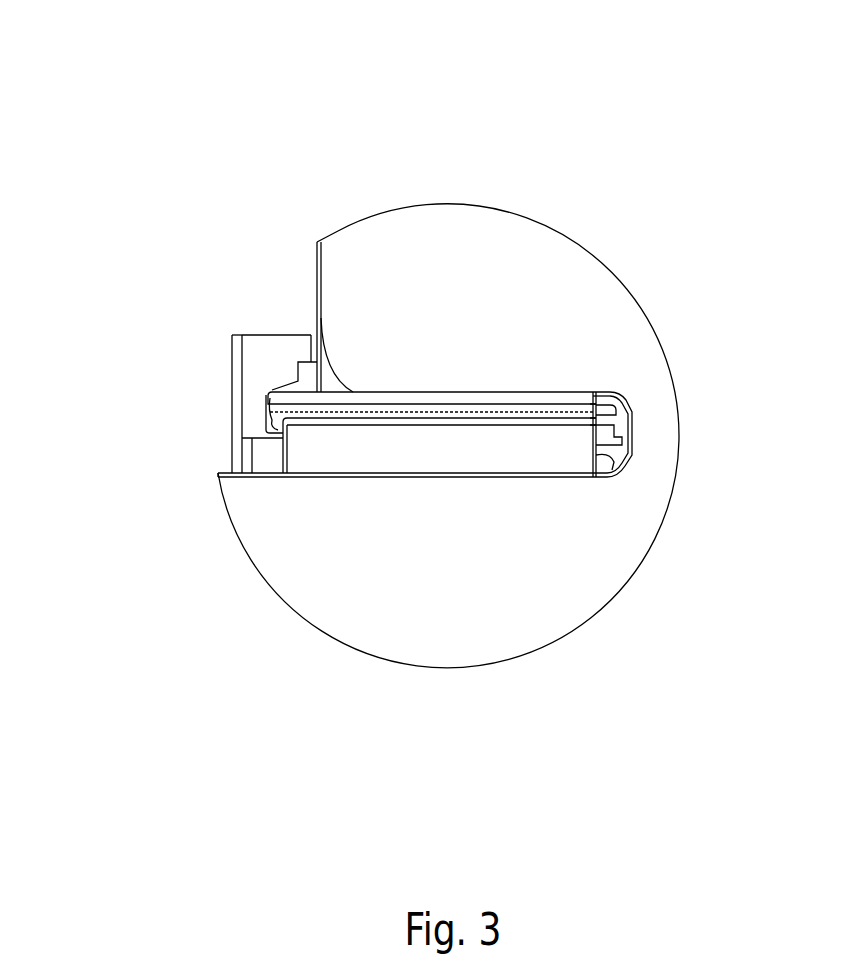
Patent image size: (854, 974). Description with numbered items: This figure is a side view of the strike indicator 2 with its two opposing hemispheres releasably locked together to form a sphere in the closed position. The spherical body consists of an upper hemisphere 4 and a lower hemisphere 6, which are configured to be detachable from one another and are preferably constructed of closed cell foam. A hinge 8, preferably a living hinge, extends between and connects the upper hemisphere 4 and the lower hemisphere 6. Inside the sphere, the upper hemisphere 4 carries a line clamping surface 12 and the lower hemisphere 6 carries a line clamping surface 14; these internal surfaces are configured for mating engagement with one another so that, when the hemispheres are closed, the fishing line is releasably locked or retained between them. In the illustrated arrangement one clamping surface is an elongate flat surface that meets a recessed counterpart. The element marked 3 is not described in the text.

The strike indicator 2 is at (455, 412).
The frame block 3 is at (270, 390).
The upper hemisphere 4 is at (308, 362).
The lower hemisphere 6 is at (421, 590).
The hinge 8 is at (618, 438).
The line clamping surface of the upper hemisphere 12 is at (412, 405).
The line clamping surface of the lower hemisphere 14 is at (358, 423).